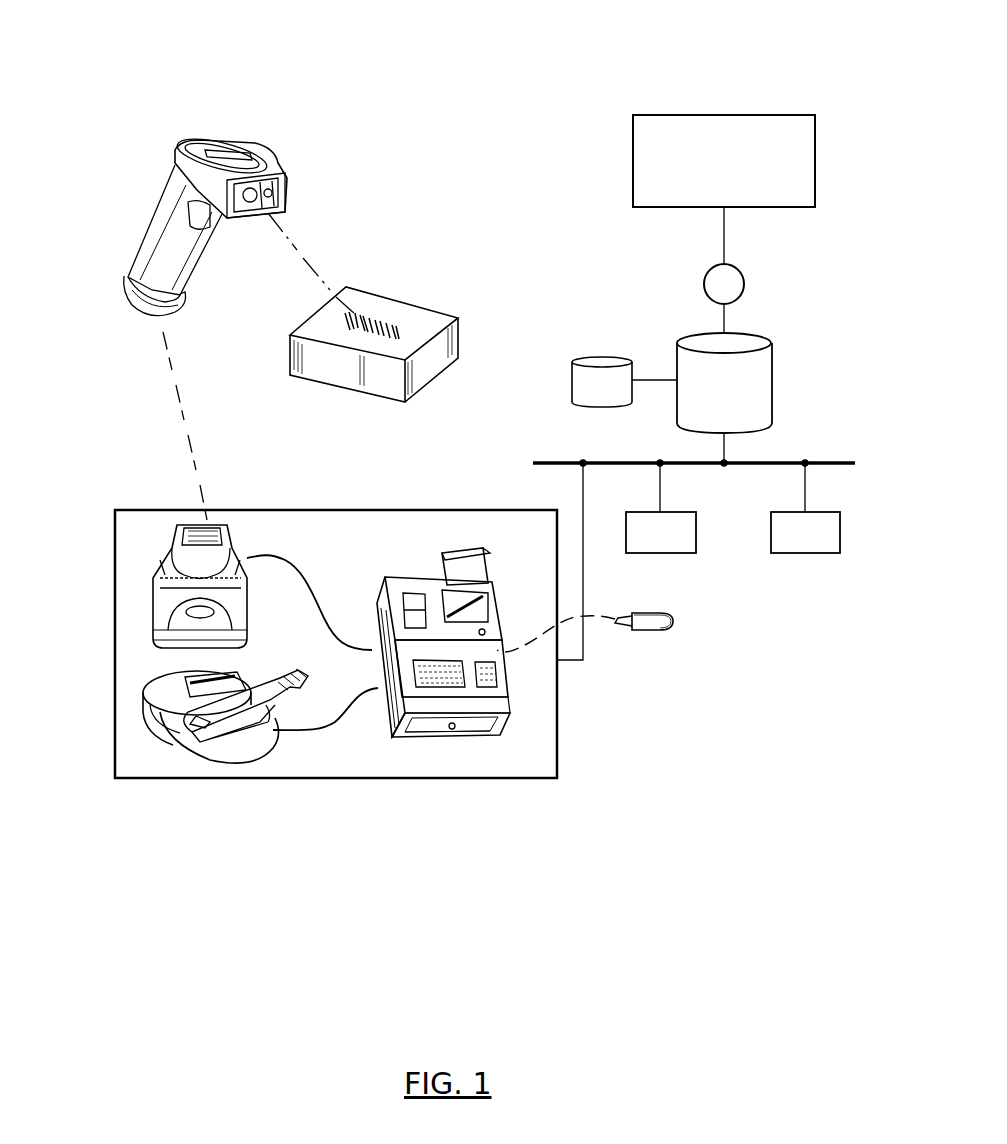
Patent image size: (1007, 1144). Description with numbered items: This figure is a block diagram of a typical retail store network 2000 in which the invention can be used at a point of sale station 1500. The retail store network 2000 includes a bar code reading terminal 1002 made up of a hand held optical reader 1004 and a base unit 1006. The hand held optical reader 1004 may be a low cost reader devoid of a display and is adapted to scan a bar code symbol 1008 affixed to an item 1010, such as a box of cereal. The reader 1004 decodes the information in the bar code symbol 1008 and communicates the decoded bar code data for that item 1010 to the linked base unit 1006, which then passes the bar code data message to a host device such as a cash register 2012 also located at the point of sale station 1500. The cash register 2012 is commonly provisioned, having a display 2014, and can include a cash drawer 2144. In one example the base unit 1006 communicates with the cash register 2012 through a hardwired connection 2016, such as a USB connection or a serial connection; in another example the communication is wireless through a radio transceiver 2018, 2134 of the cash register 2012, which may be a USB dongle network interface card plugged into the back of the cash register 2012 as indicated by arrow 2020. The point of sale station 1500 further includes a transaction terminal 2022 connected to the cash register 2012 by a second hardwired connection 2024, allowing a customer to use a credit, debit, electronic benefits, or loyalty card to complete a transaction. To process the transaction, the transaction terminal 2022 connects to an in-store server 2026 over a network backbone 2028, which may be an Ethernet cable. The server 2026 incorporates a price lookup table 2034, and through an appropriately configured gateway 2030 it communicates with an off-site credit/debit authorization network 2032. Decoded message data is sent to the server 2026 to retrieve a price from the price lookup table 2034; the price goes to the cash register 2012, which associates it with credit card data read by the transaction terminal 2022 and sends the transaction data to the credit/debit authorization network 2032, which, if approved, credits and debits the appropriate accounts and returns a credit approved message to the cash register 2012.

The retail store network 2000 is at (200, 60).
The bar code reading terminal 1002 is at (110, 230).
The hand held optical reader 1004 is at (148, 210).
The base unit 1006 is at (165, 522).
The bar code symbol 1008 is at (386, 318).
The item 1010 is at (425, 368).
The point of sale station 1500 is at (333, 510).
The cash register 2012 is at (512, 697).
The display 2014 is at (478, 607).
The hardwired connection 2016 is at (309, 577).
The radio transceiver 2018 is at (660, 630).
The radio transceiver 2134 is at (652, 621).
The arrow 2020 is at (595, 620).
The transaction terminal 2022 is at (193, 760).
The second hardwired connection 2024 is at (355, 712).
The in-store server 2026 is at (772, 368).
The network backbone 2028 is at (805, 463).
The gateway 2030 is at (745, 287).
The credit/debit authorization network 2032 is at (815, 178).
The price lookup table 2034 is at (598, 360).
The cash drawer 2144 is at (477, 728).